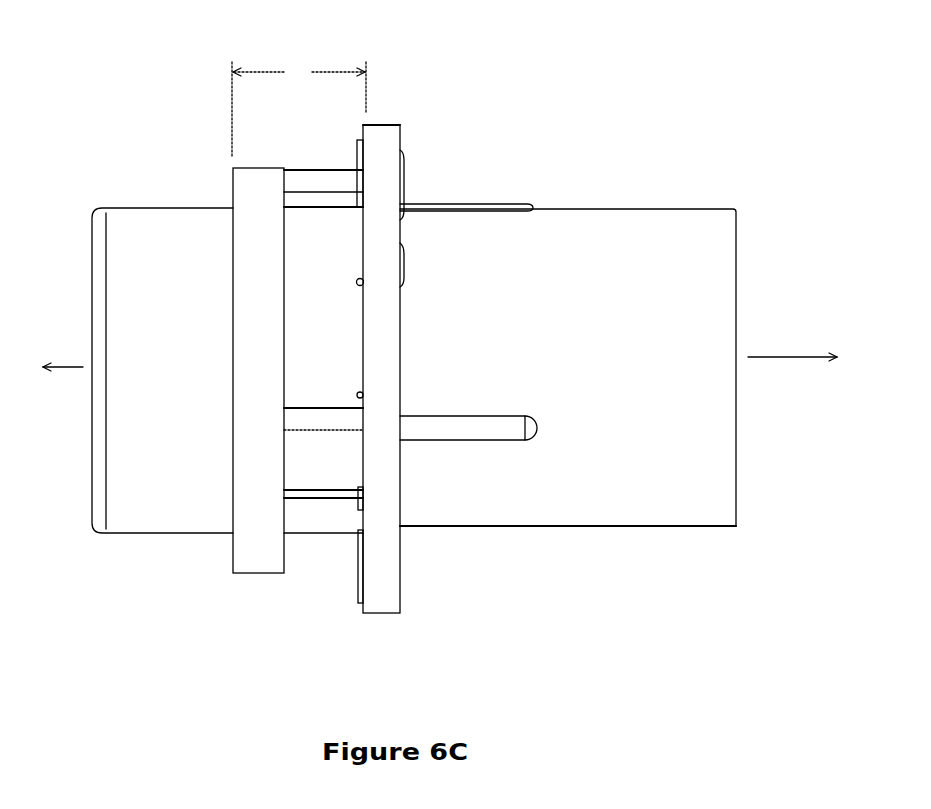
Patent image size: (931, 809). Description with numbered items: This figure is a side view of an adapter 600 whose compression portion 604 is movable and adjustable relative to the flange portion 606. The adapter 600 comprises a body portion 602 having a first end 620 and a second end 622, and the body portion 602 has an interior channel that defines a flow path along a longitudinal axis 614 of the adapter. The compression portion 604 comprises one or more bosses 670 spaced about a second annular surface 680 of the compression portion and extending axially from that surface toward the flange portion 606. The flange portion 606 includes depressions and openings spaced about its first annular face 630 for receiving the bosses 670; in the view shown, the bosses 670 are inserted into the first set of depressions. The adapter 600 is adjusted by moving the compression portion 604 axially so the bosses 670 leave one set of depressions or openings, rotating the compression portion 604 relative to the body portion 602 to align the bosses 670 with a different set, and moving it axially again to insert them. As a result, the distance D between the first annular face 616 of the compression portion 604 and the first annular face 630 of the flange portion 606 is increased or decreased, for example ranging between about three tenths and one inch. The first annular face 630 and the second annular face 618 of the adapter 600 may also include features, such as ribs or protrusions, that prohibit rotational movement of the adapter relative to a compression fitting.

The adapter 600 is at (613, 100).
The body portion 602 is at (672, 233).
The compression portion 604 is at (218, 381).
The flange portion 606 is at (378, 140).
The longitudinal axis 614 is at (797, 355).
The first annular face of the compression portion 616 is at (232, 183).
The second annular face 618 is at (405, 582).
The first end 620 is at (122, 543).
The second end 622 is at (710, 545).
The first annular face of the flange portion 630 is at (365, 297).
The bosses 670 is at (347, 182).
The second annular surface 680 is at (290, 567).